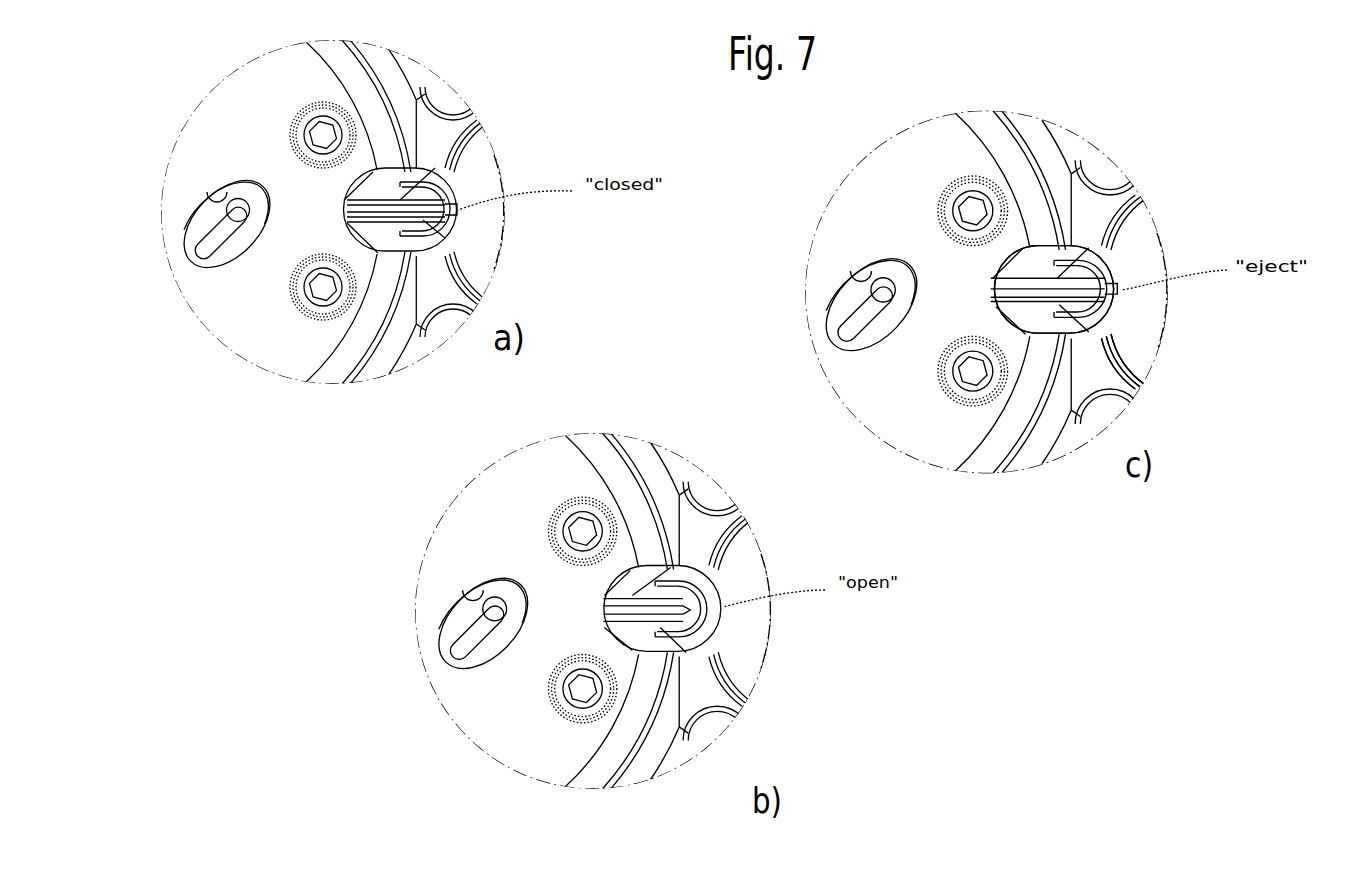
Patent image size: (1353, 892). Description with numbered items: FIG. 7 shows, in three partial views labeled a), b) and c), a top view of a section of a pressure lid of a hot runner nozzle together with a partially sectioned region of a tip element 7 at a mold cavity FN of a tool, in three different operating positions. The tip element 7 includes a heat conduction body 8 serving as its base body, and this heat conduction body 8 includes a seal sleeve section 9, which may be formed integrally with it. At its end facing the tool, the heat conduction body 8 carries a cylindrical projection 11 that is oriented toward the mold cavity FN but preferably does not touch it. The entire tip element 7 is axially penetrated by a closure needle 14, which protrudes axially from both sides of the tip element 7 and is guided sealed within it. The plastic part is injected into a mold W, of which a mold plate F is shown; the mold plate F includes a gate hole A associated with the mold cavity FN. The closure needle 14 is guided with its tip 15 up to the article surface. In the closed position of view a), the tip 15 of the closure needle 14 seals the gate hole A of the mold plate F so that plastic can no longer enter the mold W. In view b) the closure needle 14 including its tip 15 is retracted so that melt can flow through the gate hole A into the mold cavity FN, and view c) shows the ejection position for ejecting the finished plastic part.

The mold W is at (480, 155).
The mold cavity FN is at (493, 222).
The mold plate F is at (1142, 355).
The gate hole A is at (725, 618).
The tip element 7 is at (1008, 318).
The heat conduction body 8 is at (1032, 310).
The seal sleeve section 9 is at (1085, 310).
The projection 11 is at (1073, 328).
The closure needle 14 is at (653, 607).
The tip 15 is at (700, 602).